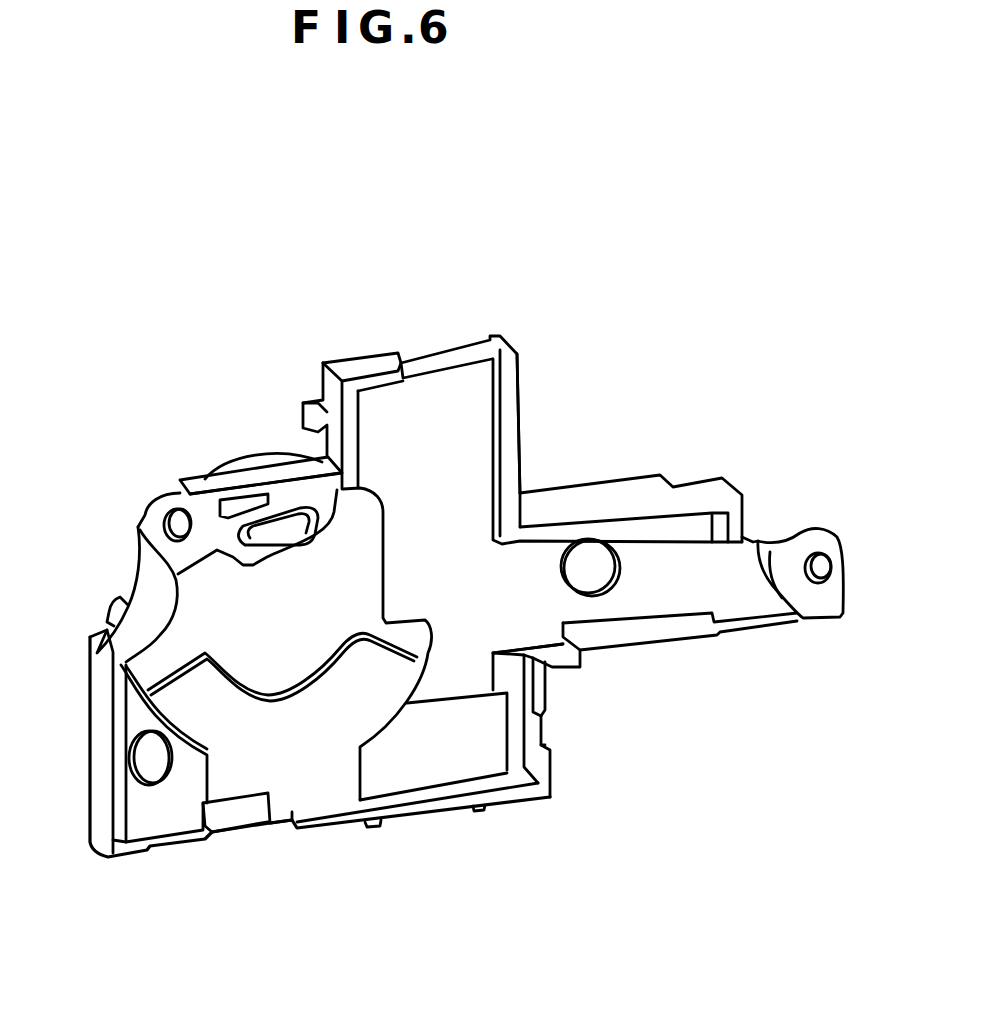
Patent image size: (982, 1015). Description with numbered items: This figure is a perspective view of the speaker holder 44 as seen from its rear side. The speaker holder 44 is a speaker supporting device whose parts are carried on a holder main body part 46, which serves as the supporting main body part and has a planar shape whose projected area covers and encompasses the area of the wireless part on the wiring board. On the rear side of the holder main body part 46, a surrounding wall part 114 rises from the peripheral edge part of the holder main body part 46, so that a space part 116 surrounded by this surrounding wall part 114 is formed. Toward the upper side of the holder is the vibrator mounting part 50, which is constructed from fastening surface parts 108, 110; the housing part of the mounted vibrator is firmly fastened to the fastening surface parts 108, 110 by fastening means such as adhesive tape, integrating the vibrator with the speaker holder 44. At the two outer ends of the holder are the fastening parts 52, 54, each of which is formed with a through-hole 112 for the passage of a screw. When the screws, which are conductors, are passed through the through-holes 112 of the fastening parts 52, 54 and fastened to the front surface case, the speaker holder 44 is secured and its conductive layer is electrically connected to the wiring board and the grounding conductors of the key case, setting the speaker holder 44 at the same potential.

The speaker holder 44 is at (57, 720).
The holder main body part 46 is at (253, 782).
The vibrator mounting part 50 is at (258, 333).
The fastening part 52 is at (183, 491).
The fastening part 54 is at (830, 530).
The fastening surface part 108 is at (213, 480).
The fastening surface part 110 is at (306, 450).
The through-hole 112 is at (163, 527).
The surrounding wall part 114 is at (513, 437).
The space part 116 is at (462, 657).